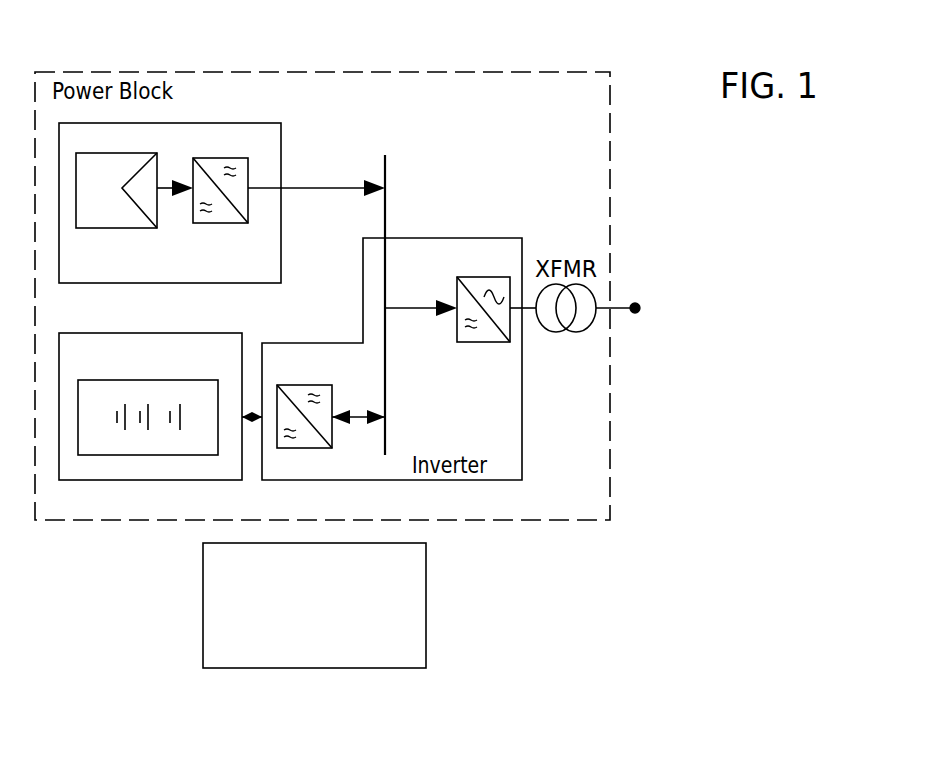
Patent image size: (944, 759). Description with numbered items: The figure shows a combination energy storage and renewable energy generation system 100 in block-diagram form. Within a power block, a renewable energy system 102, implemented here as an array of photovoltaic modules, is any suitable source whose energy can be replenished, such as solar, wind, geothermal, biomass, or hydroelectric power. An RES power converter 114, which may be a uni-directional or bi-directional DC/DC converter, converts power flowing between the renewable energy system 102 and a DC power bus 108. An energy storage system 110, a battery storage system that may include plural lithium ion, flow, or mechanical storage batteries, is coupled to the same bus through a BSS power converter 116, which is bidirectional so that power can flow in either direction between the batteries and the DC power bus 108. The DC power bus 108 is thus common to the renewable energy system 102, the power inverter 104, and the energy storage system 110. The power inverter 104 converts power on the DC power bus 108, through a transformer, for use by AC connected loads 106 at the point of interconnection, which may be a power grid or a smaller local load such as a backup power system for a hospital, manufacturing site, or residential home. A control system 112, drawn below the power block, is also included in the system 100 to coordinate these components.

The power system 100 is at (668, 587).
The renewable energy system 102 is at (89, 228).
The power inverter 104 is at (507, 342).
The AC connected loads 106 is at (759, 311).
The DC power bus 108 is at (385, 212).
The energy storage system 110 is at (180, 455).
The control system 112 is at (314, 605).
The RES power converter 114 is at (248, 168).
The BSS power converter 116 is at (302, 448).